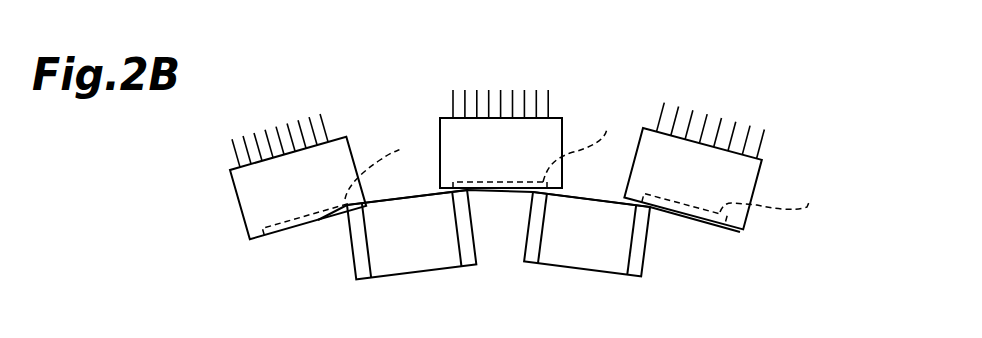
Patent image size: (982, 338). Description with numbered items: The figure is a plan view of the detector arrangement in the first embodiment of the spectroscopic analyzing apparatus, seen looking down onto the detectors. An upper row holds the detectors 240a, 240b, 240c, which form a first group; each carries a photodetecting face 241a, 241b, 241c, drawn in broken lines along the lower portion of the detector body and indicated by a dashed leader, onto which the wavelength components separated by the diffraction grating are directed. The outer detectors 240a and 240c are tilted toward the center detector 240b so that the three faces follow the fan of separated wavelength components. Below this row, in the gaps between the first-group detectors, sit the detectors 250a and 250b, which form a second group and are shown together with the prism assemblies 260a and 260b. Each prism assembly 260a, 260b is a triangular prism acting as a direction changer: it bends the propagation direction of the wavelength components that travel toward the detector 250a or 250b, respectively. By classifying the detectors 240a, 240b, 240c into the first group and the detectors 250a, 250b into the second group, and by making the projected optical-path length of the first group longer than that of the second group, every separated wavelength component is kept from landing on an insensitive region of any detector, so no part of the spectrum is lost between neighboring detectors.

The detector 240a is at (343, 160).
The detector 240b is at (547, 138).
The detector 240c is at (755, 170).
The photodetecting face 241a is at (347, 177).
The photodetecting face 241b is at (547, 143).
The photodetecting face 241c is at (743, 197).
The detector 250a is at (480, 247).
The detector 250b is at (647, 258).
The prism assembly 260a is at (420, 252).
The prism assembly 260b is at (582, 253).